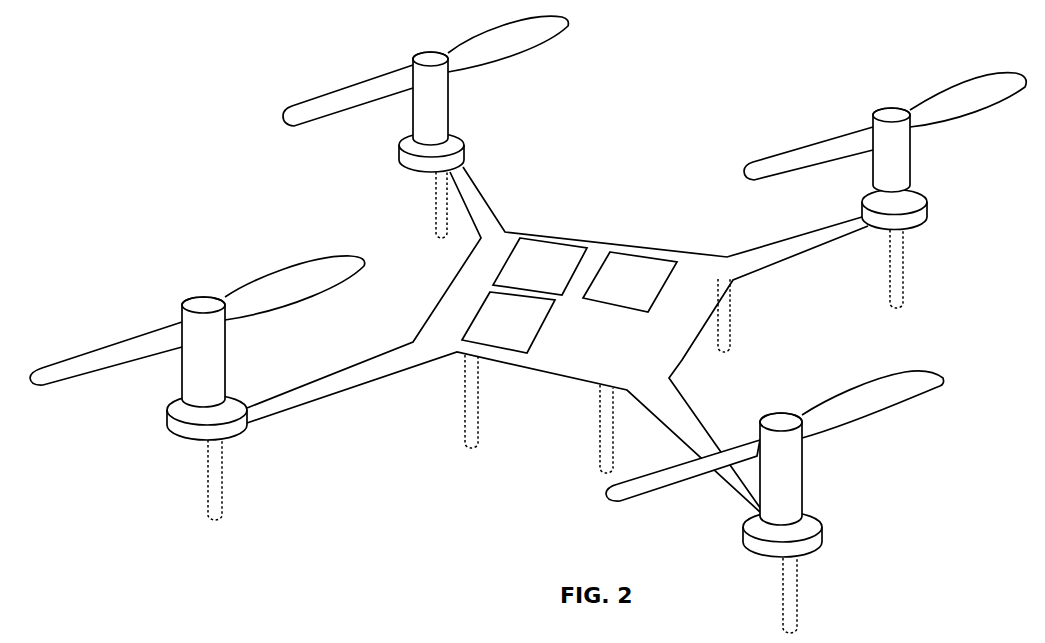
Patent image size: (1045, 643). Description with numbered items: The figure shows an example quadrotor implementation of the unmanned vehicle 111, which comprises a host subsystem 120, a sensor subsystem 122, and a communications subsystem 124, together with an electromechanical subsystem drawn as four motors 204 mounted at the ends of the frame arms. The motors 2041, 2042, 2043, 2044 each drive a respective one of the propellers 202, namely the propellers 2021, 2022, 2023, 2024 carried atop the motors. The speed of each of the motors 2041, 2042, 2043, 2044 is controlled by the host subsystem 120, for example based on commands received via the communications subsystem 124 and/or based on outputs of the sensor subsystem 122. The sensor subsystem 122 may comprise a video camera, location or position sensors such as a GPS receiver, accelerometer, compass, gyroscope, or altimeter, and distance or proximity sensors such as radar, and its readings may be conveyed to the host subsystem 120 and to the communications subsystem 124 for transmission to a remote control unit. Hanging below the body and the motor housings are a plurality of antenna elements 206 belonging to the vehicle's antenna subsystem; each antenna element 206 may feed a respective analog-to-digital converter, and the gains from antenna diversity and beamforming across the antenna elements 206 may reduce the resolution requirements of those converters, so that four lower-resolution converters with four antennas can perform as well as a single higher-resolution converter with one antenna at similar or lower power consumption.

The unmanned vehicle 111 is at (215, 152).
The host subsystem 120 is at (559, 275).
The sensor subsystem 122 is at (527, 333).
The communications subsystem 124 is at (649, 290).
The propellers 202 is at (528, 258).
The first propeller 2021 is at (348, 91).
The second propeller 2022 is at (822, 142).
The third propeller 2023 is at (103, 346).
The fourth propeller 2024 is at (838, 398).
The motors 204 is at (548, 304).
The first motor 2041 is at (465, 148).
The second motor 2042 is at (927, 212).
The third motor 2043 is at (167, 428).
The fourth motor 2044 is at (825, 542).
The antenna elements 206 is at (437, 212).